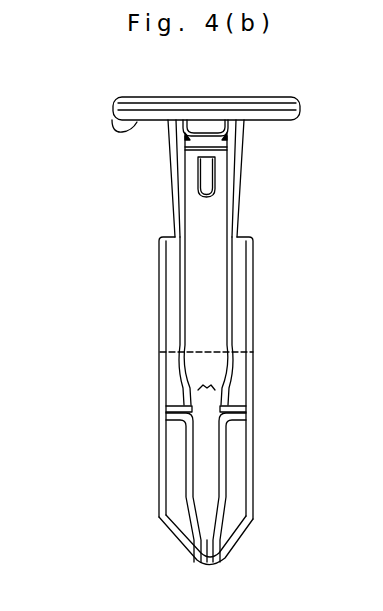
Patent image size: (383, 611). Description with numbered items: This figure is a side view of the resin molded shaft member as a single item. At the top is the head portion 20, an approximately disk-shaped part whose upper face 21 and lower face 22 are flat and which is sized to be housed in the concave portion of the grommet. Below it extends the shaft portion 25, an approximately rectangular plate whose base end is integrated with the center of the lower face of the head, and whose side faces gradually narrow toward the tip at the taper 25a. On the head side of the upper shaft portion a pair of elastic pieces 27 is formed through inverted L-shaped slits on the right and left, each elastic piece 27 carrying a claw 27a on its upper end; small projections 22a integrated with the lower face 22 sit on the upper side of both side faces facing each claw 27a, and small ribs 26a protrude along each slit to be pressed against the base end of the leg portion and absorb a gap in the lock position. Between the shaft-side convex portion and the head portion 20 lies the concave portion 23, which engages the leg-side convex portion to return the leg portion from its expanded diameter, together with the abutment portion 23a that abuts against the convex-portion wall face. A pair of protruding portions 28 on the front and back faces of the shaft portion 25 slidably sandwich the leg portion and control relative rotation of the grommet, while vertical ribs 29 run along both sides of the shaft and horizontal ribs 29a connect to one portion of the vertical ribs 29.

The head portion 20 is at (78, 37).
The upper face 21 is at (140, 98).
The lower face 22 is at (111, 121).
The small projection 22a is at (210, 123).
The concave portion 23 is at (217, 363).
The abutment portion 23a is at (215, 388).
The shaft portion 25 is at (150, 350).
The taper 25a is at (233, 555).
The small rib 26a is at (245, 157).
The elastic piece 27 is at (185, 188).
The claw 27a is at (170, 138).
The protruding portion 28 is at (160, 270).
The vertical rib 29 is at (202, 300).
The horizontal rib 29a is at (160, 403).